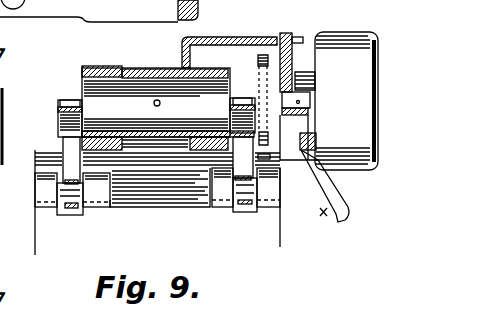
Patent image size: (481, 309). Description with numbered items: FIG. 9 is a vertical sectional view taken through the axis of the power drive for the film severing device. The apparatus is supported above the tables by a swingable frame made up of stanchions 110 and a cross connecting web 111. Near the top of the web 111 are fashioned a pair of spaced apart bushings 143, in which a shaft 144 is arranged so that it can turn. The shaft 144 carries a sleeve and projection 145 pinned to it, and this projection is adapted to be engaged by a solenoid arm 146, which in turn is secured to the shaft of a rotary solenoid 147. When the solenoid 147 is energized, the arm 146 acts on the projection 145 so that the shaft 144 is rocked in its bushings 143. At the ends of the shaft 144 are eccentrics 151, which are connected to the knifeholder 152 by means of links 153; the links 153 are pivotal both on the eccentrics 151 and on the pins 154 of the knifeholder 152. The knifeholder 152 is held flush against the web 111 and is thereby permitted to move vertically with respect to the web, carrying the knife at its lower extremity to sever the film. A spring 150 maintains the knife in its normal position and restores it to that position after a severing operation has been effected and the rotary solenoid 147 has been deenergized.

The stanchions 110 is at (324, 205).
The cross connecting web 111 is at (10, 224).
The bushings 143 is at (115, 68).
The shaft 144 is at (0, 75).
The sleeve and projection 145 is at (244, 40).
The solenoid arm 146 is at (293, 33).
The rotary solenoid 147 is at (347, 37).
The spring 150 is at (258, 63).
The eccentrics 151 is at (58, 122).
The knifeholder 152 is at (158, 238).
The links 153 is at (65, 146).
The pins 154 is at (80, 202).